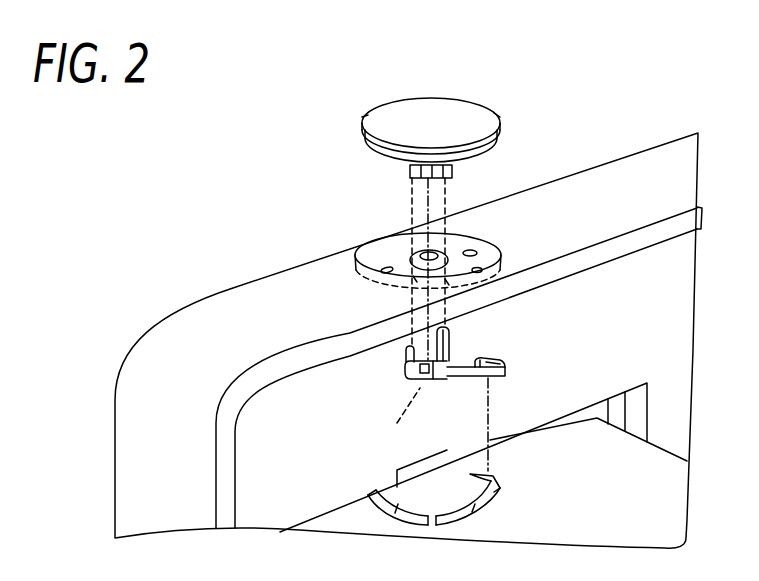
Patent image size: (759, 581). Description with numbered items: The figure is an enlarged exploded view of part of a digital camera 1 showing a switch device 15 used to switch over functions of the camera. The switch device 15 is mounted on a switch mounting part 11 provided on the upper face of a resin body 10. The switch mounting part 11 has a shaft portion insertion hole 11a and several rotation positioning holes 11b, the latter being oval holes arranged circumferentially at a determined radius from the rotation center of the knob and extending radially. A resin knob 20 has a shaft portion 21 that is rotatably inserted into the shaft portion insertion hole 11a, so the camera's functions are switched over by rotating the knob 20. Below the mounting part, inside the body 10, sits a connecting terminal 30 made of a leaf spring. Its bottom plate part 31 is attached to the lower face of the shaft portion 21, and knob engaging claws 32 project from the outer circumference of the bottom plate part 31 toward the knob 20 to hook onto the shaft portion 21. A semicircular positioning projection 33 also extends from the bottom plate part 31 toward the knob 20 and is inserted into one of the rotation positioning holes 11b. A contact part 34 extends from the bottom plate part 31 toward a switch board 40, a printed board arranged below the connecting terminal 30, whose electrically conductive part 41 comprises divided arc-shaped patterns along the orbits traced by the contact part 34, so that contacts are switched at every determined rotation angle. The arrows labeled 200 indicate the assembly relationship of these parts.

The digital camera 1 is at (732, 50).
The body 10 is at (577, 194).
The switch mounting part 11 is at (426, 224).
The shaft portion insertion hole 11a is at (418, 253).
The rotation positioning holes 11b is at (388, 270).
The switch device 15 is at (429, 186).
The knob 20 is at (480, 127).
The shaft portion 21 is at (408, 170).
The connecting terminal 30 is at (468, 375).
The bottom plate part 31 is at (406, 353).
The knob engaging claws 32 is at (428, 380).
The positioning projection 33 is at (445, 329).
The contact part 34 is at (505, 362).
The switch board 40 is at (333, 520).
The electrically conductive part 41 is at (380, 497).
The insertion direction 200 is at (435, 242).